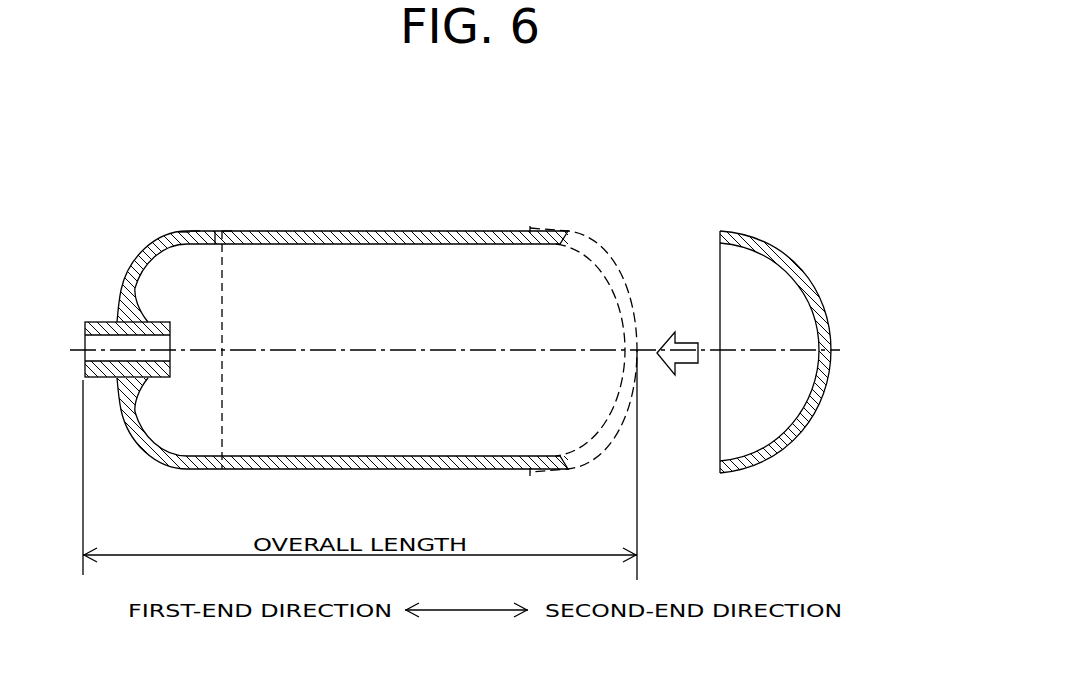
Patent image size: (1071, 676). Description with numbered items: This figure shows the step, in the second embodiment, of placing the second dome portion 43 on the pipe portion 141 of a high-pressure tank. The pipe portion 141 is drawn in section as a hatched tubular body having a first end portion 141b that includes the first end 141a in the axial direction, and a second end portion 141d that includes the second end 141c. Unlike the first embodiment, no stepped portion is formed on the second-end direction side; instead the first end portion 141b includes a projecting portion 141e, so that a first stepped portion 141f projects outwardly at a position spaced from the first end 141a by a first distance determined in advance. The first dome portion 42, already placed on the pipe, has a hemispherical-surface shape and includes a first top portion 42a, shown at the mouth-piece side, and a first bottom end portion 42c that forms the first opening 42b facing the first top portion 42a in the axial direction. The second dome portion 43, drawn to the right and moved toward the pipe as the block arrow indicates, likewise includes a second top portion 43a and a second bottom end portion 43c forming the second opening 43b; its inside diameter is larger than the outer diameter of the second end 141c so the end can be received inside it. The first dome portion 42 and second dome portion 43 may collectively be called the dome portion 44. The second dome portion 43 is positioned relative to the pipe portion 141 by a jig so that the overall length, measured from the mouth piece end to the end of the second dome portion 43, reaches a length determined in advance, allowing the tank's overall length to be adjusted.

The pipe portion 141 is at (377, 272).
The first end 141a is at (178, 232).
The first end portion 141b is at (195, 186).
The second end 141c is at (570, 238).
The second end portion 141d is at (558, 190).
The projecting portion 141e is at (225, 229).
The first stepped portion 141f is at (215, 229).
The first dome portion 42 is at (304, 370).
The first top portion 42a is at (114, 300).
The first opening 42b is at (226, 433).
The first bottom end portion 42c is at (232, 472).
The second dome portion 43 is at (787, 375).
The second top portion 43a is at (831, 305).
The second opening 43b is at (712, 453).
The second bottom end portion 43c is at (718, 477).
The dome portion 44 is at (477, 373).